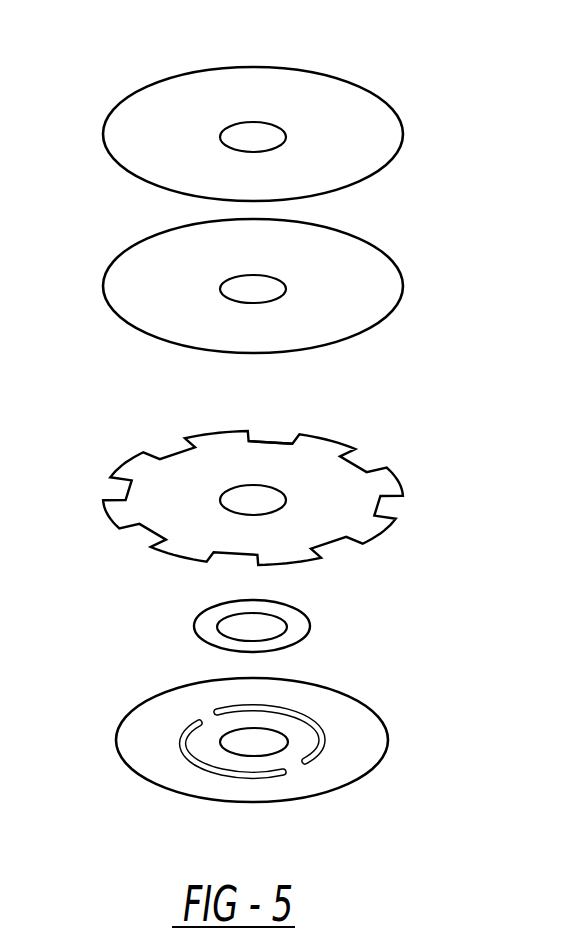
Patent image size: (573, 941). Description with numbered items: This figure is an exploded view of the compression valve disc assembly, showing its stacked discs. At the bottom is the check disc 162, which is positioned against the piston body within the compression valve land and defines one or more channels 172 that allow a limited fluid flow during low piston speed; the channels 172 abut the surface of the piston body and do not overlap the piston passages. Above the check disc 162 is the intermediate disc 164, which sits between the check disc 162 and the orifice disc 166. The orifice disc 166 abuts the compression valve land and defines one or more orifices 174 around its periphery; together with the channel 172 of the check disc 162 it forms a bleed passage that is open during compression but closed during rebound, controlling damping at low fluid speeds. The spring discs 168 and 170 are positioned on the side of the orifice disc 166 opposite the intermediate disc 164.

The check disc 162 is at (303, 756).
The intermediate disc 164 is at (194, 633).
The orifice disc 166 is at (137, 455).
The spring disc 168 is at (401, 303).
The spring disc 170 is at (148, 86).
The channel 172 is at (312, 762).
The orifice 174 is at (275, 437).